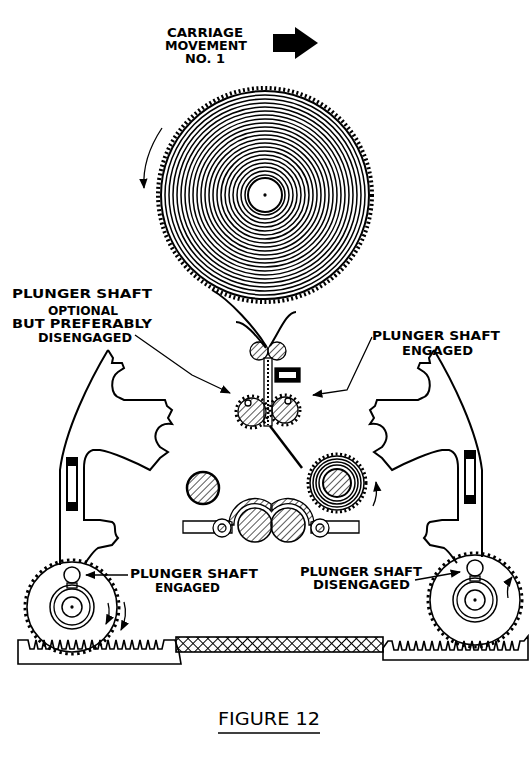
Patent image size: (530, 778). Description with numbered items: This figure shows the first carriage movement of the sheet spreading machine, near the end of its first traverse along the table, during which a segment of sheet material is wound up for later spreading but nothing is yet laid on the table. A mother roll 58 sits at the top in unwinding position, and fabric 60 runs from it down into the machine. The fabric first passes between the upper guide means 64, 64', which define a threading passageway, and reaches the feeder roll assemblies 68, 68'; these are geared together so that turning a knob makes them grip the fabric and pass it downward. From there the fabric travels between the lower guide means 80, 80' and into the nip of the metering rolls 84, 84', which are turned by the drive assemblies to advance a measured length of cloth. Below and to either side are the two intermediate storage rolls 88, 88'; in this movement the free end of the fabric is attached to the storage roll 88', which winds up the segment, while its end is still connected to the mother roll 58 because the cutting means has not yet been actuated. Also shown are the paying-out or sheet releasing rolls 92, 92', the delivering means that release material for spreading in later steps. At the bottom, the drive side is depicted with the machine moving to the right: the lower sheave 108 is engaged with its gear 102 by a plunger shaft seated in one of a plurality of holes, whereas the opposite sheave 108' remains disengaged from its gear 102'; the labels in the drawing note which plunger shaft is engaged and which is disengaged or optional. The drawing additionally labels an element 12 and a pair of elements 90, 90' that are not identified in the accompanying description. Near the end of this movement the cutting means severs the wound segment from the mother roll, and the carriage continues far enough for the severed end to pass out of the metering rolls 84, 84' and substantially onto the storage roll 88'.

The carriage base plate 12 is at (198, 637).
The mother roll 58 is at (368, 152).
The fabric 60 is at (218, 300).
The upper guide means 64 is at (238, 335).
The upper guide means 64' is at (304, 326).
The feeder roll assembly 68 is at (229, 351).
The feeder roll assembly 68' is at (306, 351).
The lower guide means 80 is at (241, 392).
The lower guide means 80' is at (306, 379).
The metering roll 84 is at (233, 415).
The metering roll 84' is at (302, 414).
The intermediate storage roll 88 is at (192, 483).
The intermediate storage roll 88' is at (342, 472).
The bracket arm 90 is at (210, 520).
The bracket arm 90' is at (329, 518).
The sheet releasing roll 92 is at (237, 533).
The sheet releasing roll 92' is at (303, 533).
The gear 102 is at (72, 593).
The gear 102' is at (476, 586).
The sheave 108 is at (42, 572).
The sheave 108' is at (435, 594).